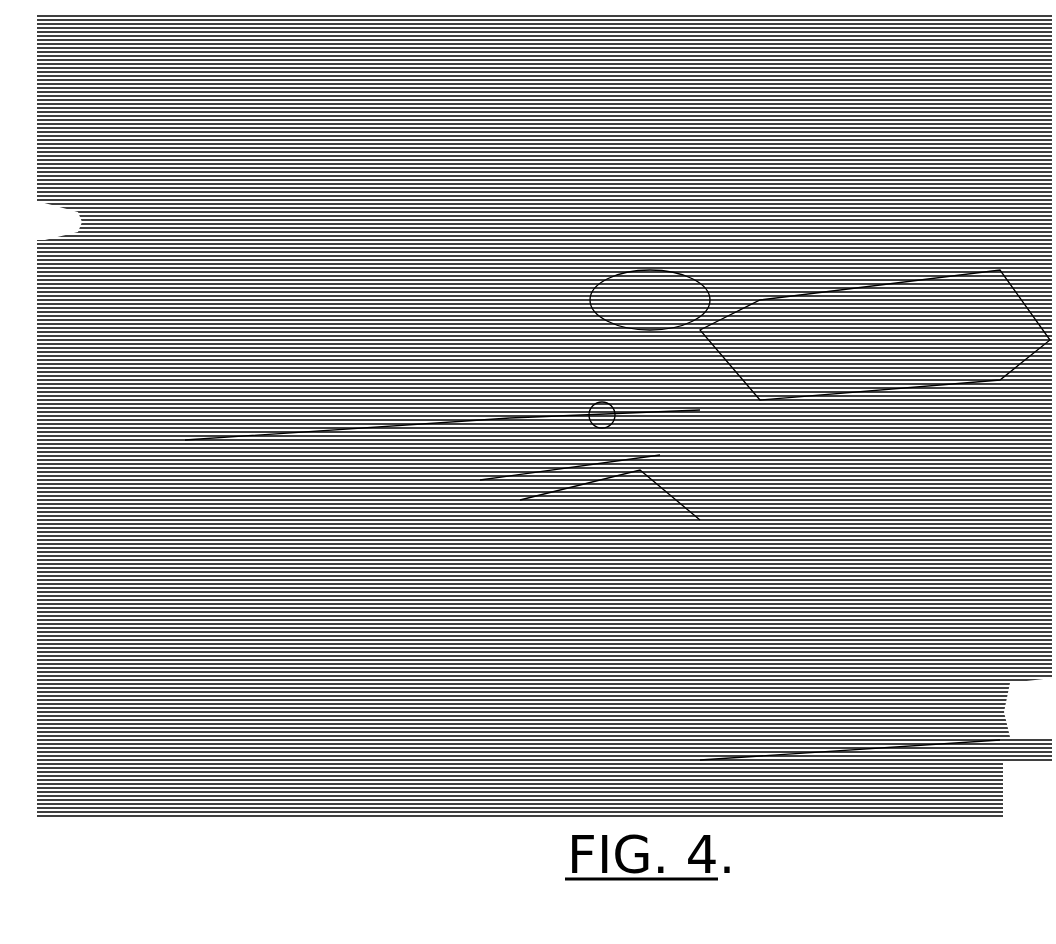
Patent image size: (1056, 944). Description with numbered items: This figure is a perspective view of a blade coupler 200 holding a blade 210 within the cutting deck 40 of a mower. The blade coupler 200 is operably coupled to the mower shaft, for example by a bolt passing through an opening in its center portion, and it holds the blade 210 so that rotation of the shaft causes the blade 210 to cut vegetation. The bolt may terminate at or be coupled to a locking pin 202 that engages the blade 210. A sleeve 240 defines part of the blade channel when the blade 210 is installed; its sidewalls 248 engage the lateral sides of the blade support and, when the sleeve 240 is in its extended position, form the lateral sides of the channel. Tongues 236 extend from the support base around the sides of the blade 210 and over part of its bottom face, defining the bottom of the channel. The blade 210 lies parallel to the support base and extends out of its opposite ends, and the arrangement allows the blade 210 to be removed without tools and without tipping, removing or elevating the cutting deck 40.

The cutting deck 40 is at (852, 788).
The blade coupler 200 is at (650, 269).
The locking pin 202 is at (550, 377).
The blade 210 is at (875, 280).
The tongues 236 is at (507, 412).
The sleeve 240 is at (588, 541).
The sidewalls 248 is at (614, 498).